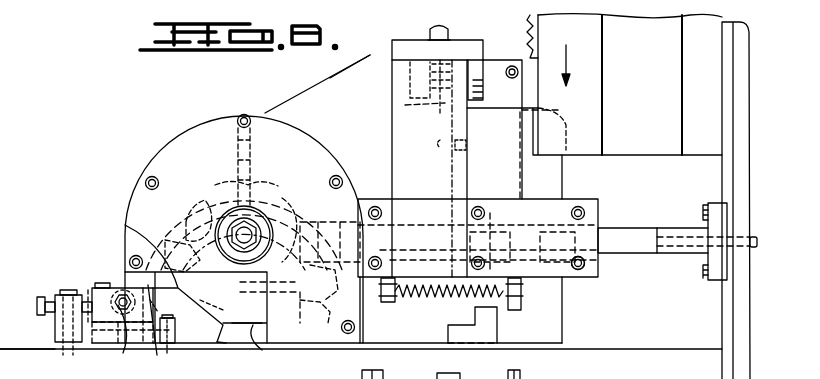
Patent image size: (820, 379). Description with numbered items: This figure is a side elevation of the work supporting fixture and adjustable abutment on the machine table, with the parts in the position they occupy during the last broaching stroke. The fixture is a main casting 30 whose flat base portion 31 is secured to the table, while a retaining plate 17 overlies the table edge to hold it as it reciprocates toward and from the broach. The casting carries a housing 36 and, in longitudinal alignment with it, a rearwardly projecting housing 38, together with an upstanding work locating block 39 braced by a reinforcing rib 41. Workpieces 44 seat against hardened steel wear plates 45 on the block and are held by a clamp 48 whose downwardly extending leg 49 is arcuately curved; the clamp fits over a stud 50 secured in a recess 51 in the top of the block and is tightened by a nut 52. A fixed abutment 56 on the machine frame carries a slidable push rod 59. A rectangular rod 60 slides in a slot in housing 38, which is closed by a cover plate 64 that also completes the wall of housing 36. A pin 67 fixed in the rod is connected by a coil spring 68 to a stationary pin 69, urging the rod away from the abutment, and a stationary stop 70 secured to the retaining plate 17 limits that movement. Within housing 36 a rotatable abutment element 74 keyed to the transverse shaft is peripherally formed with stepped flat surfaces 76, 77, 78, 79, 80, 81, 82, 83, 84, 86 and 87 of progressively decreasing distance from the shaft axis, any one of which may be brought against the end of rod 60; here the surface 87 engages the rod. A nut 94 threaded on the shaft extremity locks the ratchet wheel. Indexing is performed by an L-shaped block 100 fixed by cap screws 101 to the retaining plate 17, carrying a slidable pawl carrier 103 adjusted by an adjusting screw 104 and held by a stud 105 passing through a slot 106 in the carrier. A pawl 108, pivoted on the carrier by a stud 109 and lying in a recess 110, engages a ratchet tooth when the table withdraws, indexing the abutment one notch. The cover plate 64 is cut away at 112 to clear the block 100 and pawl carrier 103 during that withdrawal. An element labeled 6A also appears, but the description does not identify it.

The adjusting nut 6A is at (121, 209).
The retaining plates 17 is at (118, 350).
The main casting 30 is at (328, 78).
The base portion 31 is at (562, 326).
The housing 36 is at (172, 139).
The housing 38 is at (575, 199).
The work locating block 39 is at (410, 148).
The reinforcing rib 41 is at (370, 55).
The workpieces 44 is at (560, 170).
The wear plates 45 is at (486, 109).
The clamp 48 is at (468, 43).
The downwardly extending leg 49 is at (478, 70).
The stud 50 is at (405, 105).
The recess 51 is at (420, 79).
The nut 52 is at (430, 31).
The fixed abutments 56 is at (672, 233).
The push rod 59 is at (672, 255).
The rods 60 is at (628, 232).
The cover plate 64 is at (598, 263).
The pins 67 is at (518, 300).
The coil springs 68 is at (450, 296).
The stationary pins 69 is at (387, 300).
The stationary stops 70 is at (448, 331).
The rotatable abutment elements 74 is at (216, 340).
The flat surface 76 is at (325, 276).
The flat surface 77 is at (310, 310).
The flat surface 78 is at (249, 323).
The flat surface 79 is at (205, 304).
The flat surface 80 is at (186, 288).
The flat surface 81 is at (205, 238).
The flat surface 82 is at (214, 220).
The flat surface 83 is at (234, 188).
The flat surface 84 is at (238, 172).
The flat surface 86 is at (284, 206).
The flat surface 87 is at (286, 222).
The nut 94 is at (258, 214).
The L-shaped block 100 is at (82, 340).
The cap screws 101 is at (58, 290).
The pawl carrier 103 is at (84, 290).
The adjusting screw 104 is at (48, 318).
The stud 105 is at (106, 282).
The slot 106 is at (96, 287).
The pawl 108 is at (126, 226).
The stud 109 is at (126, 340).
The recess 110 is at (151, 305).
The cut away portion 112 is at (262, 350).